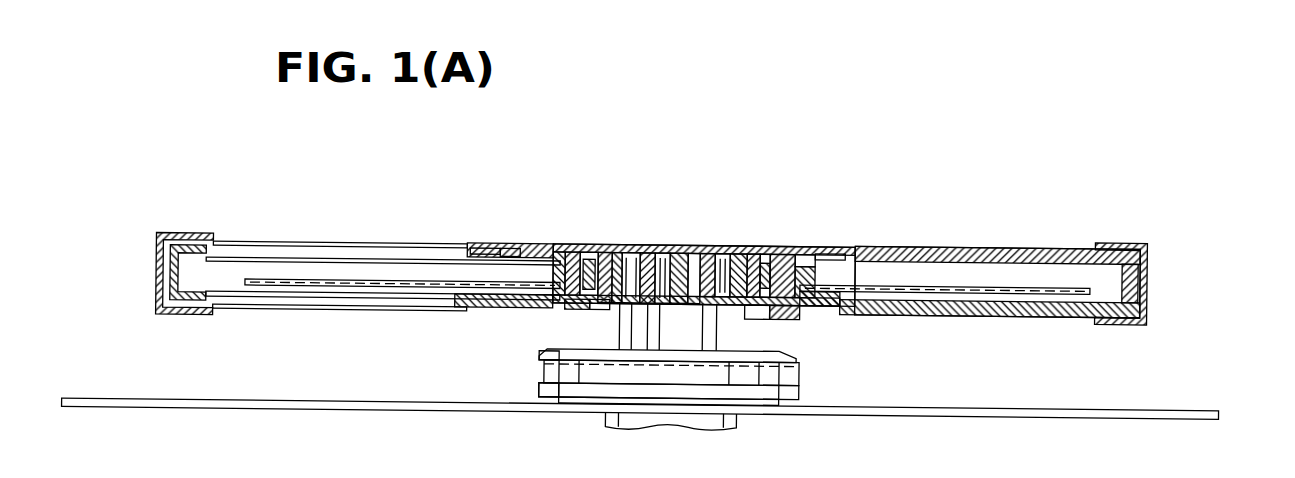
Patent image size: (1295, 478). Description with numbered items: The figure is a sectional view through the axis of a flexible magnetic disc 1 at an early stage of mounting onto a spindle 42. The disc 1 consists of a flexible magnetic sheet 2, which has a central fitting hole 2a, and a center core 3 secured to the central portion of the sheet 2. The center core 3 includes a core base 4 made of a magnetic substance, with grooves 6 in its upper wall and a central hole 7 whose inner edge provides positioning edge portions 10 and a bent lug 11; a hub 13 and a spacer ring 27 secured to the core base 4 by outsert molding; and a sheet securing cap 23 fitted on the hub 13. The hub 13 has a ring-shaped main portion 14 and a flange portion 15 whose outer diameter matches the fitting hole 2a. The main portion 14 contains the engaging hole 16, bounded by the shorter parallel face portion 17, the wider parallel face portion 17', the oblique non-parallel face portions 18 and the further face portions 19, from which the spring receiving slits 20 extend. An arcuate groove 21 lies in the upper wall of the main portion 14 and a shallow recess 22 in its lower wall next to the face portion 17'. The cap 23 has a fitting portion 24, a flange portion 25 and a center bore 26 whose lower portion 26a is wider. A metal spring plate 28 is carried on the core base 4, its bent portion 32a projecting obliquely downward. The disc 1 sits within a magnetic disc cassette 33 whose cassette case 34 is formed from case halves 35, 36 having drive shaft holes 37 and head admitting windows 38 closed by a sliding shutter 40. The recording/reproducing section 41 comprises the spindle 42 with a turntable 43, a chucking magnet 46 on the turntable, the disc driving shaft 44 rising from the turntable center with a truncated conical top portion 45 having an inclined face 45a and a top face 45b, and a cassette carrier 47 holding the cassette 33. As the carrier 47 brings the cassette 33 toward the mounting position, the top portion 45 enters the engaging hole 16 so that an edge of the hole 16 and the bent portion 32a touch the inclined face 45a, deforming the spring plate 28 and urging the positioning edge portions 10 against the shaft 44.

The flexible magnetic disc 1 is at (918, 157).
The flexible magnetic sheet 2 is at (888, 245).
The fitting hole 2a is at (795, 245).
The center core 3 is at (863, 245).
The core base 4 is at (830, 303).
The grooves 6 is at (478, 246).
The hole 7 is at (776, 305).
The positioning edge portions 10 is at (735, 245).
The bent lug 11 is at (585, 245).
The hub 13 is at (747, 245).
The main portion 14 is at (740, 245).
The flange portion 15 is at (790, 245).
The engaging hole 16 is at (728, 245).
The parallel face portion 17 is at (668, 328).
The parallel face portion 17' is at (624, 209).
The non-parallel face portions 18 is at (706, 245).
The further face portions 19 is at (652, 306).
The spring receiving slits 20 is at (628, 245).
The arcuate groove 21 is at (760, 245).
The shallow recess 22 is at (576, 300).
The sheet securing cap 23 is at (556, 245).
The fitting portion 24 is at (563, 245).
The flange portion 25 is at (505, 246).
The center bore 26 is at (597, 245).
The lower portion 26a is at (560, 354).
The spacer ring 27 is at (796, 300).
The spring plate 28 is at (655, 245).
The bent portion 32a is at (597, 310).
The magnetic disc cassette 33 is at (1070, 231).
The cassette case 34 is at (1236, 244).
The case half 35 is at (1147, 248).
The case half 36 is at (1147, 282).
The drive shaft holes 37 is at (541, 245).
The head admitting windows 38 is at (217, 255).
The shutter 40 is at (405, 249).
The recording/reproducing section 41 is at (325, 382).
The spindle 42 is at (805, 396).
The turntable 43 is at (805, 372).
The disc driving shaft 44 is at (720, 347).
The top portion 45 is at (700, 245).
The inclined face 45a is at (672, 245).
The top face 45b is at (688, 245).
The chucking magnet 46 is at (546, 386).
The cassette carrier 47 is at (192, 246).